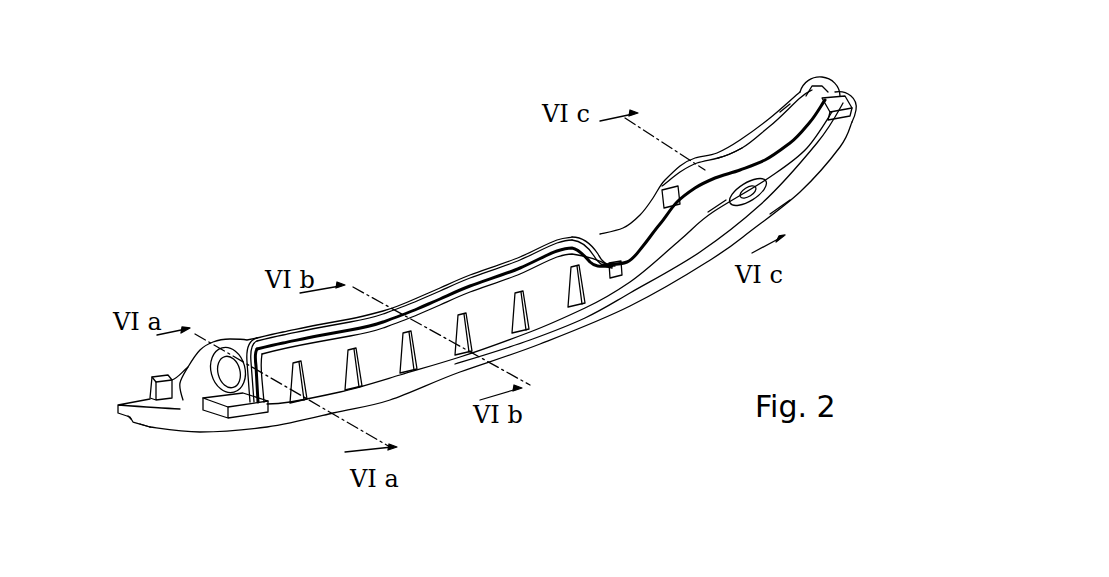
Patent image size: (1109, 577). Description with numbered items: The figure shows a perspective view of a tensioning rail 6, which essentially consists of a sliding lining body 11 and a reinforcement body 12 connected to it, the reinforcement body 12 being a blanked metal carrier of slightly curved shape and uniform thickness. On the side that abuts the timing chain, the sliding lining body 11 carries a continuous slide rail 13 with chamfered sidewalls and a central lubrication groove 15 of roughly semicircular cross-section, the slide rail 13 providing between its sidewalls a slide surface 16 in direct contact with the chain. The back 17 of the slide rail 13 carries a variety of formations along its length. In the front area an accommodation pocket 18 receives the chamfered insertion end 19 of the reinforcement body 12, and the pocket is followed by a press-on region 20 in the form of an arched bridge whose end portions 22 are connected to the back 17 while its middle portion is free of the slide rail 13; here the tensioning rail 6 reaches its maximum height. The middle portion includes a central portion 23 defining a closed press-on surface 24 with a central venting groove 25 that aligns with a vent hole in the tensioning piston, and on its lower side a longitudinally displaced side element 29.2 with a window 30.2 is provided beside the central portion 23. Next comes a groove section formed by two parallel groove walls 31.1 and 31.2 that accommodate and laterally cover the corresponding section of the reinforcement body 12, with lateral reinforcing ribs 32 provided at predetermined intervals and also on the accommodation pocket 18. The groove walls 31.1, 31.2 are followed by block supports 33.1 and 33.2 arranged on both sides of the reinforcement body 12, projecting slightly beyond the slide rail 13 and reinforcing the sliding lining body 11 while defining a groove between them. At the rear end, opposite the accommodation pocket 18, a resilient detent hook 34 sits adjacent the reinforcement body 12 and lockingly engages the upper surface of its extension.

The tensioning rail 6 is at (522, 243).
The sliding lining body 11 is at (578, 337).
The reinforcement body 12 is at (470, 288).
The slide rail 13 is at (807, 170).
The lubrication groove 15 is at (137, 421).
The slide surface 16 is at (143, 433).
The back 17 is at (827, 135).
The accommodation pocket 18 is at (820, 88).
The insertion end 19 is at (783, 112).
The press-on region 20 is at (673, 167).
The end portions 22 is at (717, 208).
The central portion 23 is at (740, 157).
The press-on surface 24 is at (663, 187).
The venting groove 25 is at (731, 160).
The side element 29.2 is at (780, 222).
The window 30.2 is at (758, 196).
The groove wall 31.1 is at (390, 303).
The groove wall 31.2 is at (443, 307).
The reinforcing ribs 32 is at (300, 393).
The block support 33.1 is at (211, 383).
The block support 33.2 is at (240, 397).
The detent hook 34 is at (155, 376).